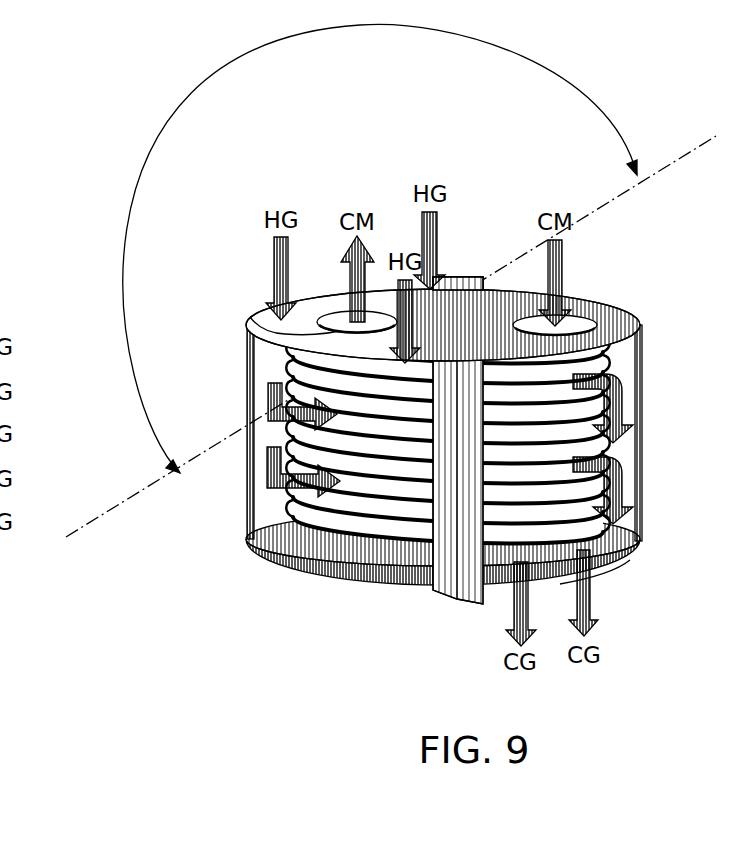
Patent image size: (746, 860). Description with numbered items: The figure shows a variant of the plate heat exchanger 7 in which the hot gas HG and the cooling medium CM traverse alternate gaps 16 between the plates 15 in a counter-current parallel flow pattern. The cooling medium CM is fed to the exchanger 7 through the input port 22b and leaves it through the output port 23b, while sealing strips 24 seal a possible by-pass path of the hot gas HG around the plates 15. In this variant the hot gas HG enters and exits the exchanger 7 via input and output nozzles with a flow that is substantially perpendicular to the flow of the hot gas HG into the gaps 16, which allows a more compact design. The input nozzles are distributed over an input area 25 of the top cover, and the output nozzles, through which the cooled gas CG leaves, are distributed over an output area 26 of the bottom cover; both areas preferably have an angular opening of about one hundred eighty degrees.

The plate heat exchanger 7 is at (640, 260).
The plates 15 is at (358, 547).
The gaps 16 is at (330, 527).
The input port 22b is at (618, 322).
The output port 23b is at (252, 318).
The sealing strips 24 is at (447, 488).
The input area 25 is at (336, 312).
The output area 26 is at (613, 547).